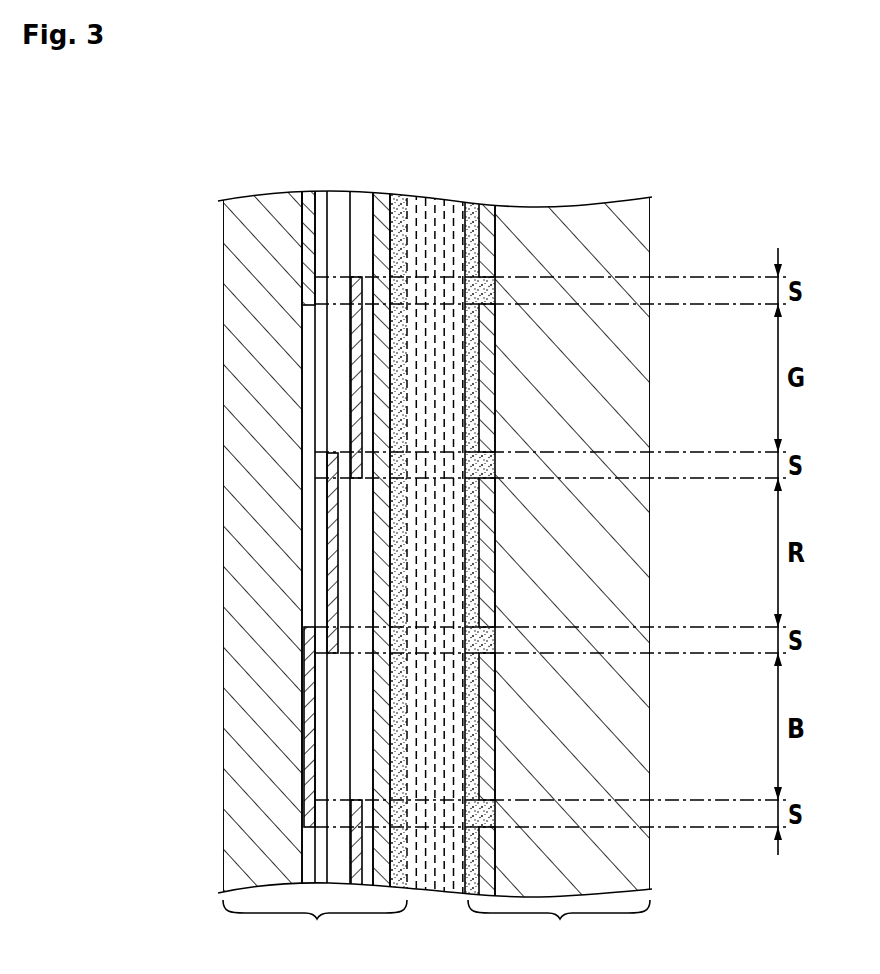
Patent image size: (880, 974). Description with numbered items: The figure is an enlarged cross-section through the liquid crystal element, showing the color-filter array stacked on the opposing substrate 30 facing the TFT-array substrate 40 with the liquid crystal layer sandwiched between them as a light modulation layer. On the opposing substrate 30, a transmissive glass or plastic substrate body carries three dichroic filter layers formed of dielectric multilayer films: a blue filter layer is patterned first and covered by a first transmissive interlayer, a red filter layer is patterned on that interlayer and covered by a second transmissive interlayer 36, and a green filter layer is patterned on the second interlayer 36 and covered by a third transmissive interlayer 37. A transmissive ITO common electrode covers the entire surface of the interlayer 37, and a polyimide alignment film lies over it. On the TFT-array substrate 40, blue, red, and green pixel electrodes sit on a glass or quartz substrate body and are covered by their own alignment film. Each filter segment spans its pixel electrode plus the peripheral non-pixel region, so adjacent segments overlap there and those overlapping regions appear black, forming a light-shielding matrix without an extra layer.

The opposing substrate 30 is at (315, 929).
The second transmissive interlayer 36 is at (338, 194).
The third transmissive interlayer 37 is at (362, 197).
The TFT-array substrate 40 is at (559, 929).